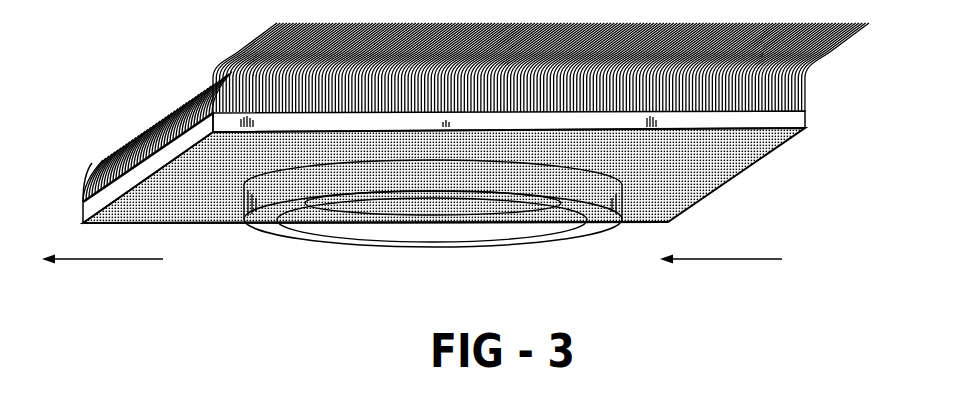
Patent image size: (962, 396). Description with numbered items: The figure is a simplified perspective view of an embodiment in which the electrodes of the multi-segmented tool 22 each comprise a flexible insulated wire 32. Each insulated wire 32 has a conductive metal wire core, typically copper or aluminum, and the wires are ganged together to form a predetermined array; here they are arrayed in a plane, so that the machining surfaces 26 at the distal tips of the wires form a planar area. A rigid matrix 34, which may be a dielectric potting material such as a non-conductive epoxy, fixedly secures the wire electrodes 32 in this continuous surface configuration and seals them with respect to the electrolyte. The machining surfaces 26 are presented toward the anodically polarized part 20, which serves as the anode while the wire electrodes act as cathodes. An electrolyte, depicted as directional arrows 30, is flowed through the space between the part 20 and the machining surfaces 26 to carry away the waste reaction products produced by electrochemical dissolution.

The anodically polarized part 20 is at (309, 248).
The multi-segmented tool 22 is at (808, 130).
The machining surface 26 is at (230, 215).
The electrolyte 30 is at (87, 263).
The insulated wire 32 is at (242, 58).
The rigid matrix 34 is at (806, 118).